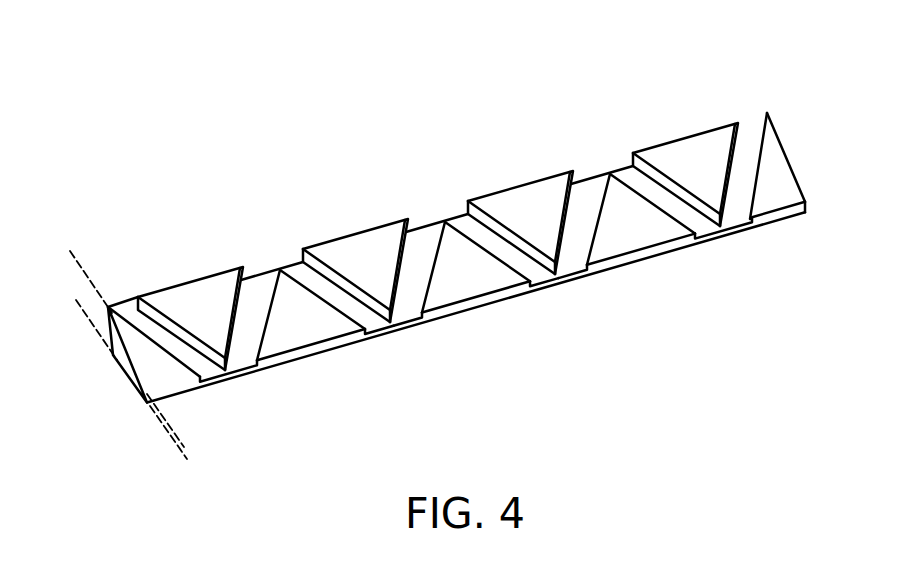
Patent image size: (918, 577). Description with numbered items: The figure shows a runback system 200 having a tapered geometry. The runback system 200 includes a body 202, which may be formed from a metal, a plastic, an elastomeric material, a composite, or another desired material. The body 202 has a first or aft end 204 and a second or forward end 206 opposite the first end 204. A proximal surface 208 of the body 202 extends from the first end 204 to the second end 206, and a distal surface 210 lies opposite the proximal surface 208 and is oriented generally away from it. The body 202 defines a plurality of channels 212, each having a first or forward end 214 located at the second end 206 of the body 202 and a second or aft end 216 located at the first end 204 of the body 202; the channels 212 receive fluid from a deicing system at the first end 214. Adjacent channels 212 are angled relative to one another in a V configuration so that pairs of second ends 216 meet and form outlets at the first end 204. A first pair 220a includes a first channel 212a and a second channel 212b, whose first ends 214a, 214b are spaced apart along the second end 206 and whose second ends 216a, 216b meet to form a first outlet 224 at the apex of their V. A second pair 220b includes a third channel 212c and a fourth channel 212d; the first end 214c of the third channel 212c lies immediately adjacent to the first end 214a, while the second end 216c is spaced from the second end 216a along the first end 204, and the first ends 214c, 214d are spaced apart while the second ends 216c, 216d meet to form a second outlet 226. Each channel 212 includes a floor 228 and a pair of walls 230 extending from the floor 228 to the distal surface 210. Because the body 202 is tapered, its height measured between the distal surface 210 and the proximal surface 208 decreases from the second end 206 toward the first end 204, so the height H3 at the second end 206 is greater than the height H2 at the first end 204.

The runback system 200 is at (143, 167).
The body 202 is at (789, 134).
The first end 204 is at (302, 350).
The second end 206 is at (190, 290).
The proximal surface 208 is at (627, 275).
The distal surface 210 is at (219, 322).
The channels 212 is at (753, 130).
The first channel 212a is at (396, 255).
The second channel 212b is at (335, 270).
The third channel 212c is at (508, 223).
The fourth channel 212d is at (568, 208).
The first end of channel 214 is at (126, 318).
The first end of first channel 214a is at (418, 223).
The first end of second channel 214b is at (294, 262).
The first end of third channel 214c is at (461, 218).
The first end of fourth channel 214d is at (594, 178).
The second end of channel 216 is at (217, 382).
The second end of first channel 216a is at (425, 330).
The second end of second channel 216b is at (372, 340).
The second end of third channel 216c is at (537, 292).
The second end of fourth channel 216d is at (590, 280).
The first pair of channels 220a is at (345, 185).
The second pair of channels 220b is at (508, 150).
The first outlet 224 is at (460, 395).
The second outlet 226 is at (635, 346).
The floor 228 is at (258, 312).
The walls 230 is at (685, 196).
The height at first end H2 is at (167, 392).
The height at second end H3 is at (82, 343).